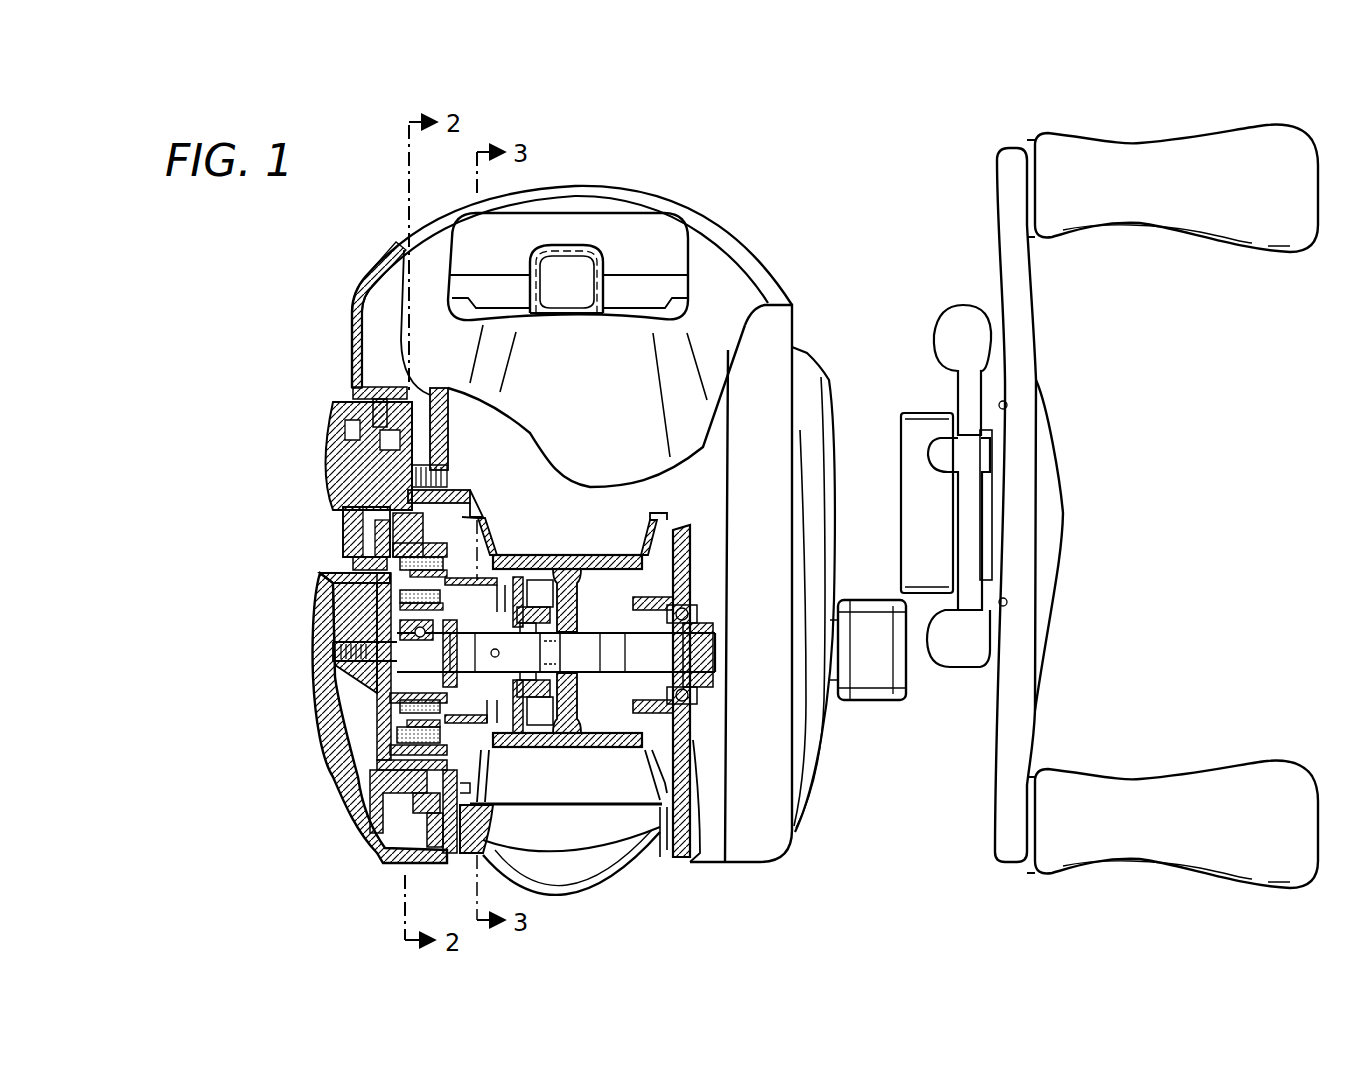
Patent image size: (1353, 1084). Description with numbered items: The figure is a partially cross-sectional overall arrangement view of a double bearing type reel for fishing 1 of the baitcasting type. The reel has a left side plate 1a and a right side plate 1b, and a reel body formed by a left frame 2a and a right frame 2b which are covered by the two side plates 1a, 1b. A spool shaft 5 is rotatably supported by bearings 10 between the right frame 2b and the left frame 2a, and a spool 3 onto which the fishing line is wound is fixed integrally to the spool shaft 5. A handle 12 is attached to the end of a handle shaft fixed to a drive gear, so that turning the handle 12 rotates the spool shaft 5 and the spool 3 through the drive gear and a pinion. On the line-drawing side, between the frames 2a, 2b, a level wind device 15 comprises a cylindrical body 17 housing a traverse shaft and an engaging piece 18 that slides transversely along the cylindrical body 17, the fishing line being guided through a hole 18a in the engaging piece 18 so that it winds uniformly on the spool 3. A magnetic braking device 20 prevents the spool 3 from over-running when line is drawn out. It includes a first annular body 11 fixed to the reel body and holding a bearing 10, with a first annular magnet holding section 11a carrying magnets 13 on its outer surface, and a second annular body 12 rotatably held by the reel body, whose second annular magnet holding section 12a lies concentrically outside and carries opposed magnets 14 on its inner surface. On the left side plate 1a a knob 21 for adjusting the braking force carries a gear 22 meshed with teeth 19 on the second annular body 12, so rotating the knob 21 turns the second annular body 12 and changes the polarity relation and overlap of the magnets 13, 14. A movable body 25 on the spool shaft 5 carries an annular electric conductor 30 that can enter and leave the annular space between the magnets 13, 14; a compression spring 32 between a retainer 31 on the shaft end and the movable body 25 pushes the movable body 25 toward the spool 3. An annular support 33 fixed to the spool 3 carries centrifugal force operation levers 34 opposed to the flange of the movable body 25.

The double bearing type reel for fishing 1 is at (888, 204).
The left side plate 1a is at (367, 268).
The right side plate 1b is at (778, 258).
The left frame 2a is at (468, 392).
The right frame 2b is at (656, 545).
The spool 3 is at (580, 487).
The spool shaft 5 is at (599, 662).
The bearing 10 is at (383, 713).
The first annular body 11 is at (380, 698).
The first annular magnet holding section 11a is at (380, 746).
The handle 12 is at (1030, 316).
The second annular magnet holding section 12a is at (438, 521).
The magnets 13 is at (390, 606).
The magnets 14 is at (330, 598).
The level wind device 15 is at (580, 228).
The cylindrical body 17 is at (651, 280).
The engaging piece 18 is at (606, 250).
The hole 18a is at (552, 262).
The teeth 19 is at (350, 531).
The magnetic braking device 20 is at (459, 568).
The knob for adjusting a braking force 21 is at (333, 440).
The gear 22 is at (348, 410).
The movable body 25 is at (549, 721).
The annular electric conductor 30 is at (480, 770).
The retainer 31 is at (490, 580).
The compression spring 32 is at (526, 690).
The annular support 33 is at (556, 601).
The centrifugal force operation levers 34 is at (527, 608).